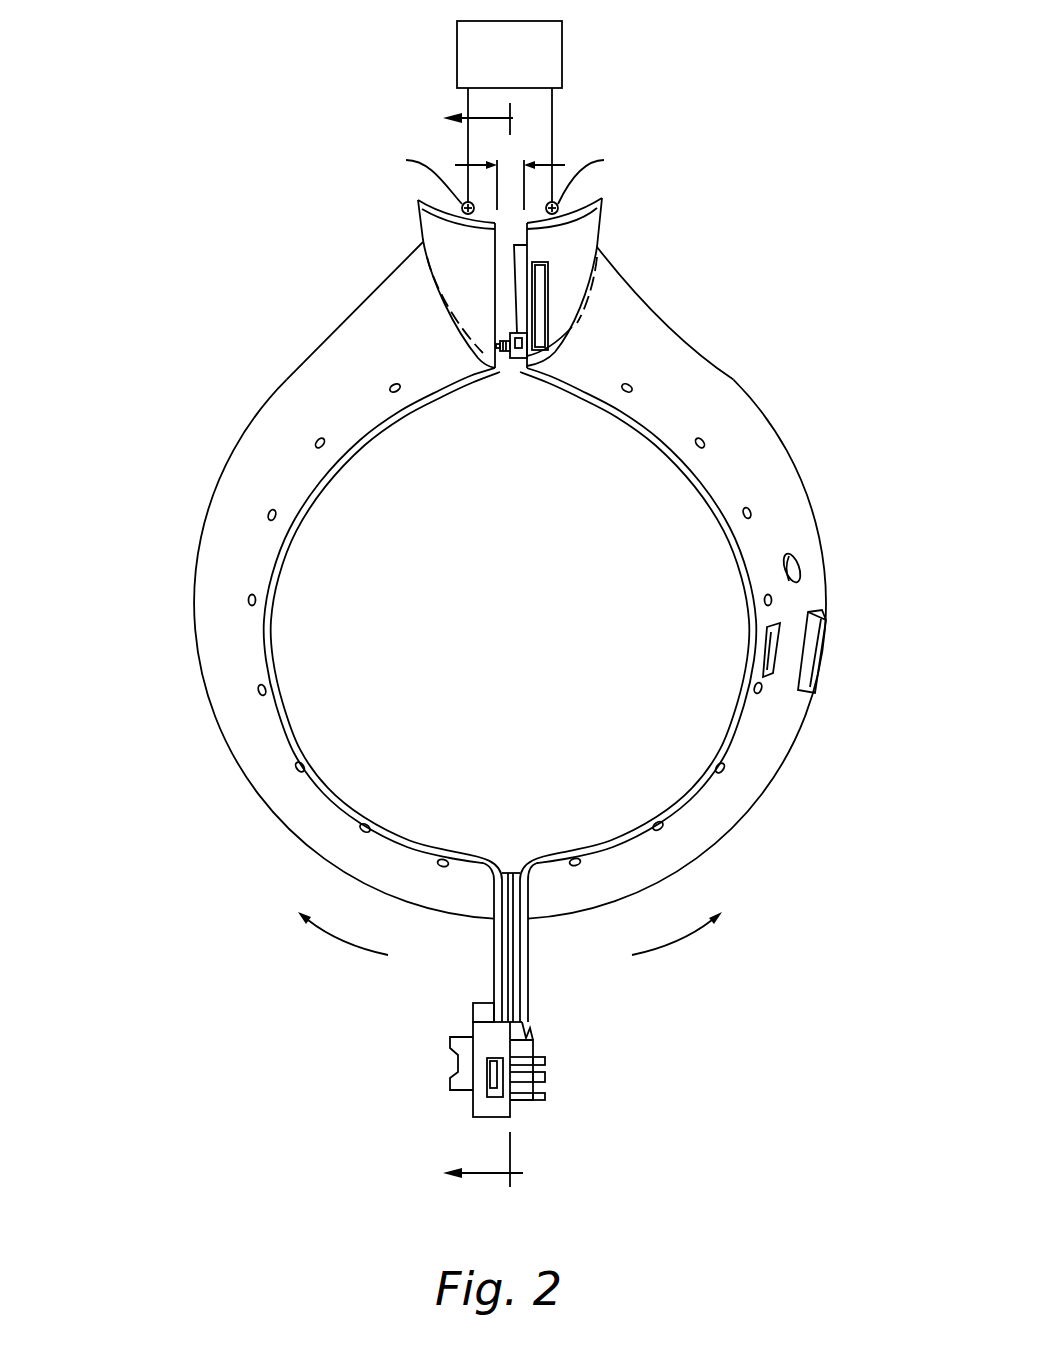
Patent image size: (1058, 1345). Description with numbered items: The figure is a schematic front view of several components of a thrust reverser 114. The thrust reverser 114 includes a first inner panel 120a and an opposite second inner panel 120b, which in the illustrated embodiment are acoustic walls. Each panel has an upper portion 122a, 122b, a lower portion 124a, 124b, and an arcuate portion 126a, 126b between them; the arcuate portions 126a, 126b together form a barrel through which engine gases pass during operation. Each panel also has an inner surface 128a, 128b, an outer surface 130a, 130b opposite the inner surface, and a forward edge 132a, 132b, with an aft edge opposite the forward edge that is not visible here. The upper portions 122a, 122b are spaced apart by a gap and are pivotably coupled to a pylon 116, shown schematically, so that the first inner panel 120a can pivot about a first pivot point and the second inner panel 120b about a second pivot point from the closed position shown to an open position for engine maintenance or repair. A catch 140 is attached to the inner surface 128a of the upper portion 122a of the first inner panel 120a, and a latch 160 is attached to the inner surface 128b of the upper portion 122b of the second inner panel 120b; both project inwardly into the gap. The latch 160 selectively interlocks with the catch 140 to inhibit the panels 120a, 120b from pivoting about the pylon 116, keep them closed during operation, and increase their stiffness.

The thrust reverser 114 is at (812, 127).
The pylon 116 is at (562, 30).
The first inner panel 120a is at (712, 621).
The second inner panel 120b is at (282, 632).
The upper portion 122a is at (600, 241).
The upper portion 122b is at (418, 222).
The lower portion 124a is at (527, 970).
The lower portion 124b is at (493, 970).
The arcuate portion 126a is at (775, 480).
The arcuate portion 126b is at (258, 470).
The inner surface 128a is at (724, 510).
The inner surface 128b is at (297, 515).
The outer surface 130a is at (728, 383).
The outer surface 130b is at (267, 392).
The forward edge 132a is at (738, 712).
The forward edge 132b is at (267, 620).
The catch 140 is at (517, 378).
The latch 160 is at (500, 376).